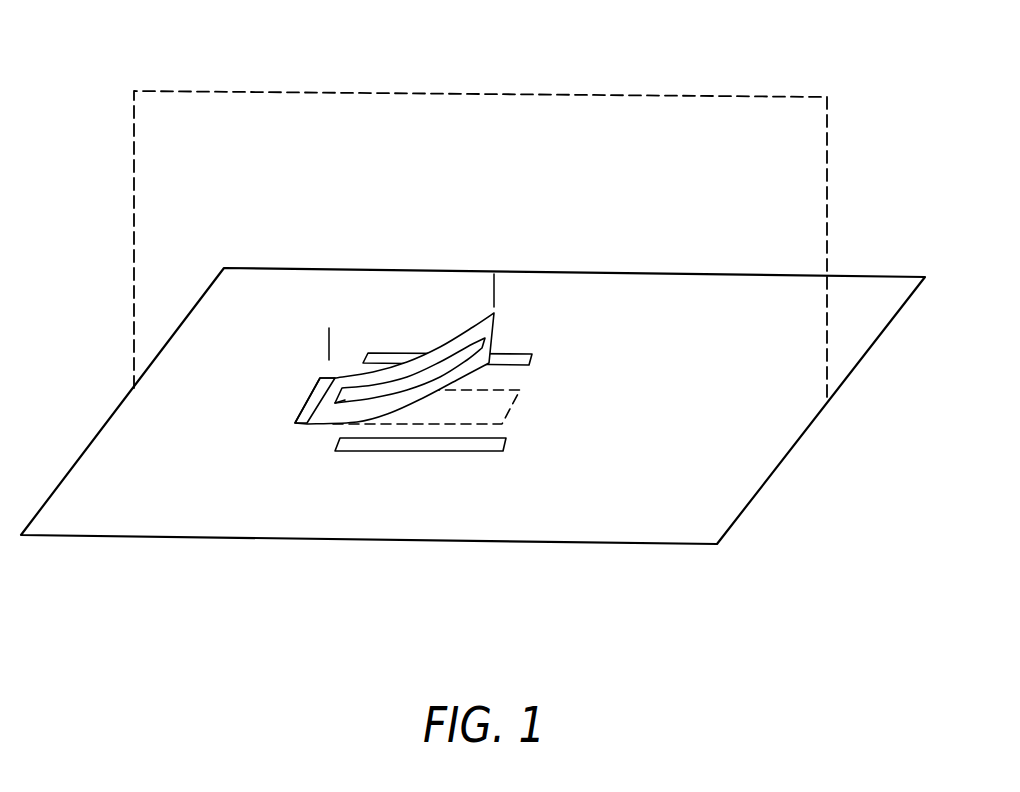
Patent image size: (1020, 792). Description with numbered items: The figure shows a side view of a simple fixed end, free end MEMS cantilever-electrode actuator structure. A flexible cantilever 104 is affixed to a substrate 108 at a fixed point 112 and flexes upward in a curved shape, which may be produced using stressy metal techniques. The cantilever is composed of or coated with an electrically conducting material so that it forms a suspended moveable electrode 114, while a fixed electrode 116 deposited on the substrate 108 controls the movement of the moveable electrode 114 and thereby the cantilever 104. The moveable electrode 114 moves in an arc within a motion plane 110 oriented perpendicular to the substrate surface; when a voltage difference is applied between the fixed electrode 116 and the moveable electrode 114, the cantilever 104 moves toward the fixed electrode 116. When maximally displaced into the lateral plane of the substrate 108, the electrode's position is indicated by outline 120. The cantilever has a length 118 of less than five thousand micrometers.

The flexible cantilever 104 is at (497, 313).
The substrate 108 is at (447, 266).
The motion plane 110 is at (380, 88).
The fixed point 112 is at (322, 385).
The moveable electrode 114 is at (342, 403).
The fixed electrode 116 is at (533, 353).
The length 118 is at (490, 294).
The outline 120 is at (521, 391).